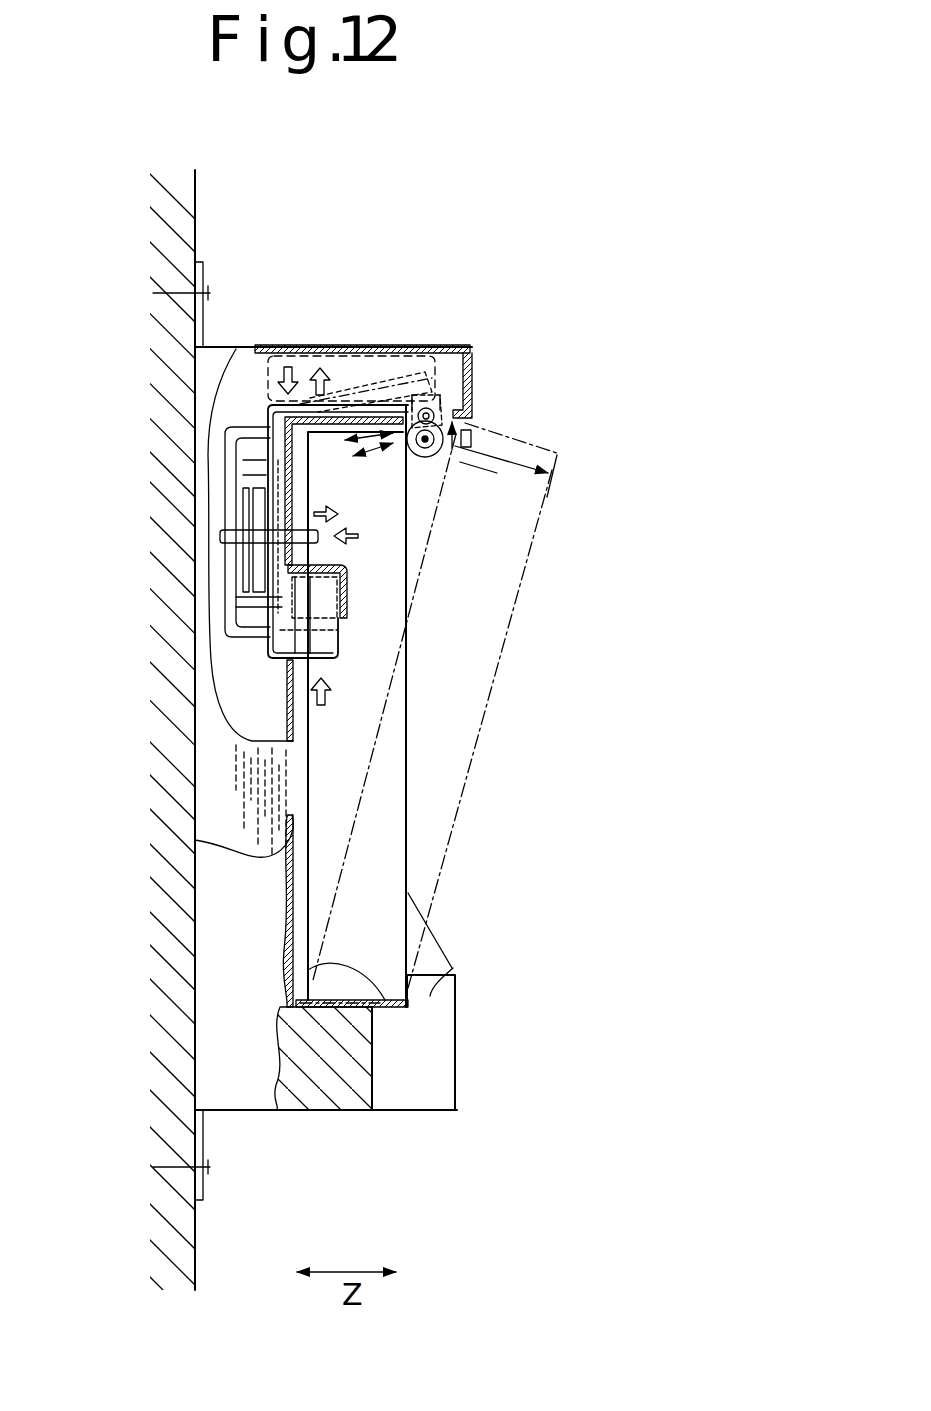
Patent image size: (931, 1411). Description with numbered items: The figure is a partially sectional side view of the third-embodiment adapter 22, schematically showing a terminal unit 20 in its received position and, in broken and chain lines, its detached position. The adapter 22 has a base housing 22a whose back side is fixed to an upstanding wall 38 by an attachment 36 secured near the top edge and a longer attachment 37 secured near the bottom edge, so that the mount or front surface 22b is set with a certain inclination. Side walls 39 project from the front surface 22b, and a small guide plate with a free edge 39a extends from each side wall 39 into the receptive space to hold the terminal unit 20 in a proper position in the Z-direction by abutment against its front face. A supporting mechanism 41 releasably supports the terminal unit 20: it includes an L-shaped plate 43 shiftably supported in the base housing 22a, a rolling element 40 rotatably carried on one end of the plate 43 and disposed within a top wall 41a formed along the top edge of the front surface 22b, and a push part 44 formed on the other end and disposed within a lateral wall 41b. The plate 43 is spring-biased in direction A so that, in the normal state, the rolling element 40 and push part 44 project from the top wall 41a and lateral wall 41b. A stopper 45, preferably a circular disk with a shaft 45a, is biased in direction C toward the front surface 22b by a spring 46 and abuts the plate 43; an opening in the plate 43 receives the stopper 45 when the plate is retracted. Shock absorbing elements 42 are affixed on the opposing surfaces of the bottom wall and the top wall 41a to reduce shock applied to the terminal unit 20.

The terminal unit 20 is at (486, 711).
The adapter 22 is at (416, 1115).
The base housing 22a is at (222, 980).
The front surface 22b is at (196, 840).
The attachment 36 is at (201, 345).
The attachment 37 is at (205, 1142).
The upstanding wall 38 is at (178, 710).
The side wall 39 is at (453, 968).
The free edge 39a is at (402, 937).
The rolling element 40 is at (424, 458).
The supporting mechanism 41 is at (425, 338).
The top wall 41a is at (432, 346).
The lateral wall 41b is at (350, 600).
The shock absorbing element 42 is at (328, 426).
The L-shaped plate 43 is at (372, 405).
The push part 44 is at (326, 662).
The stopper 45 is at (252, 508).
The shaft 45a is at (240, 552).
The spring 46 is at (252, 572).